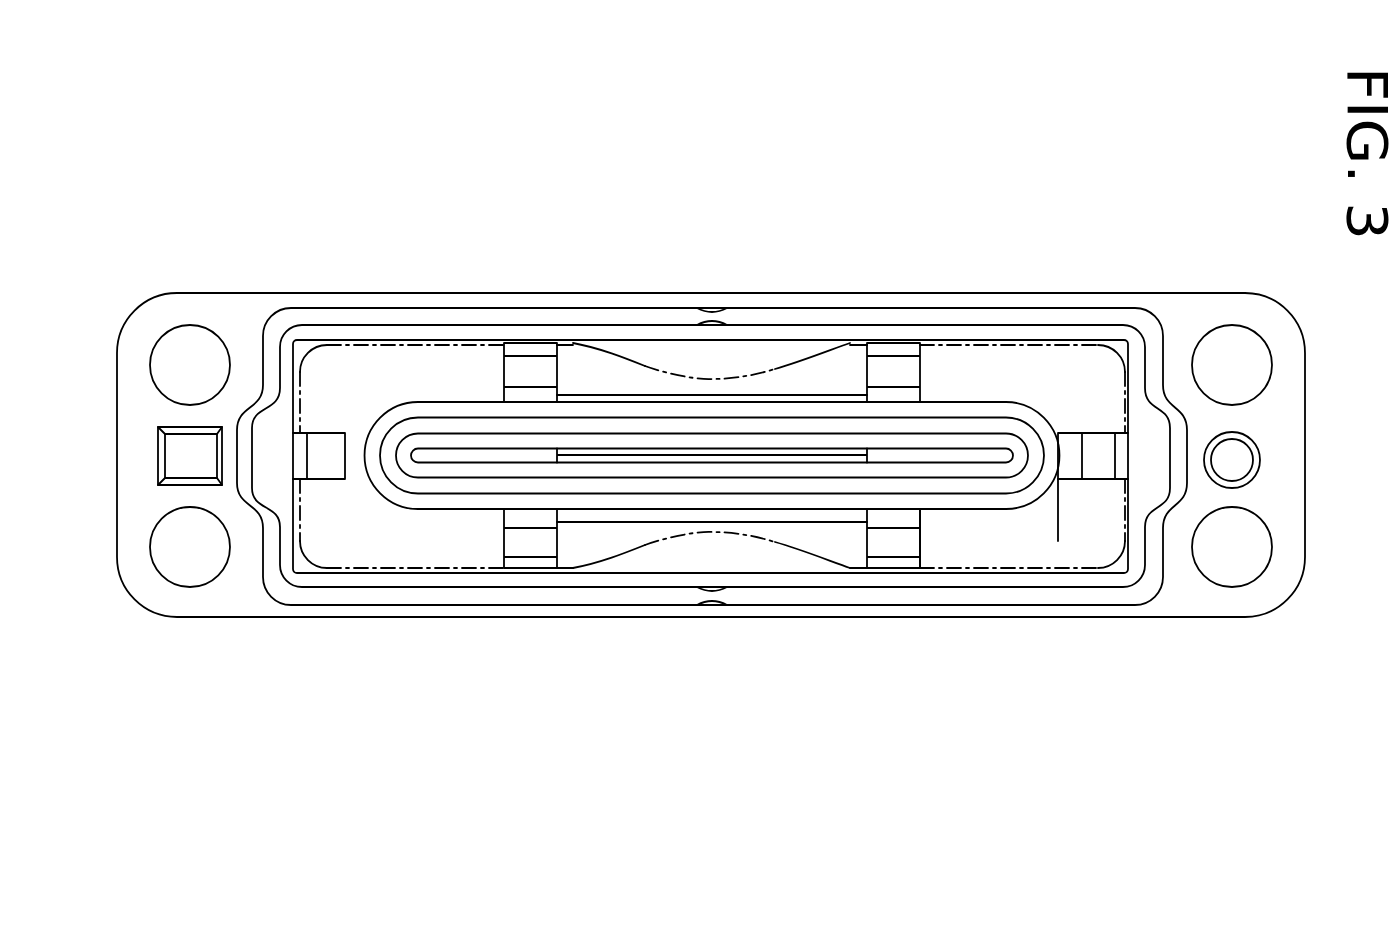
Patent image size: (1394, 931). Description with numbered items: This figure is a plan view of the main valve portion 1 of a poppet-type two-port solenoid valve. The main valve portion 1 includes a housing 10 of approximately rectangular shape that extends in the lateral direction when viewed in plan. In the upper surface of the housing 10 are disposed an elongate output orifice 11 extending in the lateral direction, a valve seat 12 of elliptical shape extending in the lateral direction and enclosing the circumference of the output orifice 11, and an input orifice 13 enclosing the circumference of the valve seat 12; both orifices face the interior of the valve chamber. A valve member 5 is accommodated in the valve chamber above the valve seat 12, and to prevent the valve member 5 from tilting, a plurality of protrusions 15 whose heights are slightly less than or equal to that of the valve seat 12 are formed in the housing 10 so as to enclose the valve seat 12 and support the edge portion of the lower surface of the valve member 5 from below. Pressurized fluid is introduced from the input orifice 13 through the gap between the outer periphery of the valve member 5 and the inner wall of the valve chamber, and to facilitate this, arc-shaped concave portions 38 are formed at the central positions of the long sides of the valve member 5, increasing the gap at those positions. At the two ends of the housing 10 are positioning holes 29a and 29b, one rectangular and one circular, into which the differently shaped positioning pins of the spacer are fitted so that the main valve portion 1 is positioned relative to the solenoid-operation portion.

The main valve portion 1 is at (908, 240).
The valve member 5 is at (352, 366).
The housing 10 is at (1012, 293).
The output orifice 11 is at (783, 458).
The valve seat 12 is at (833, 472).
The input orifice 13 is at (952, 545).
The protrusions 15 is at (528, 368).
The positioning hole 29a is at (180, 454).
The positioning hole 29b is at (1247, 460).
The arc-shaped concave portions 38 is at (657, 368).